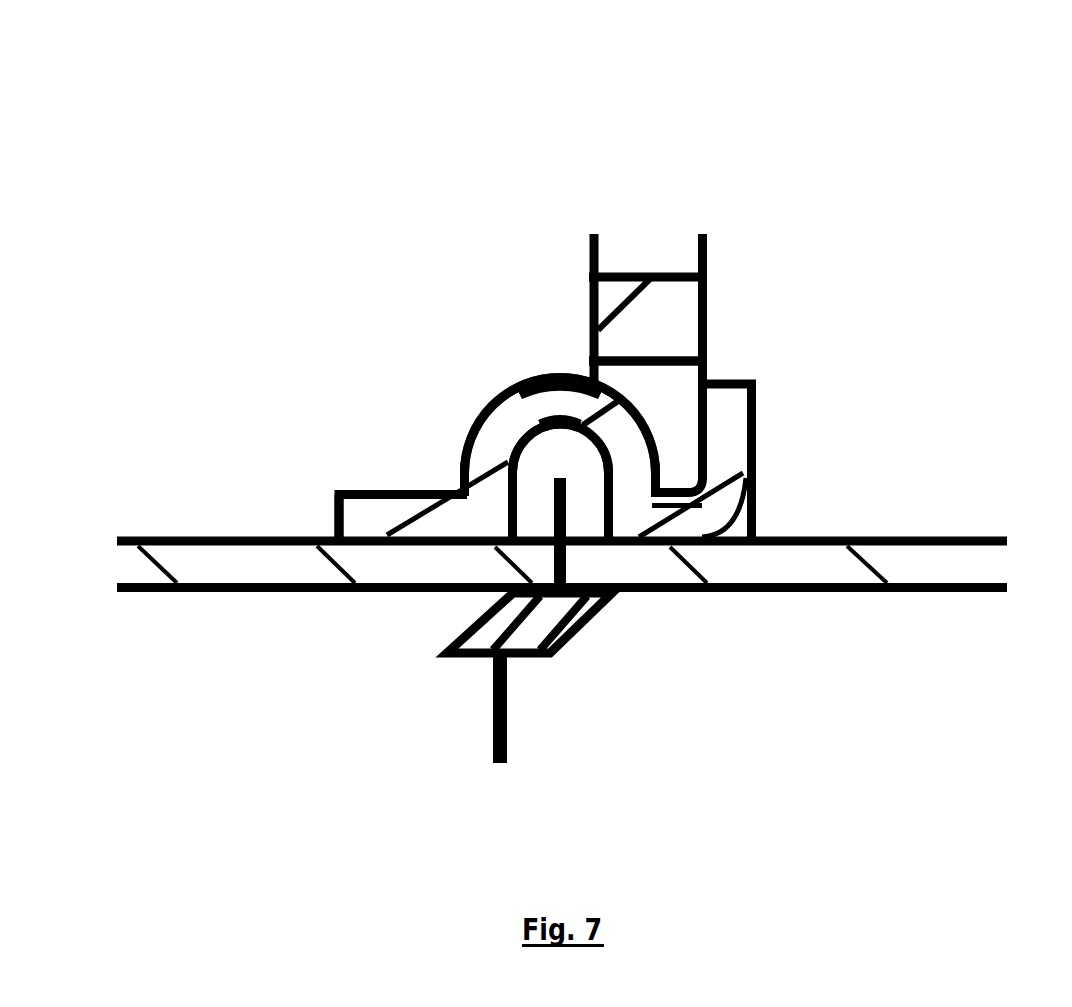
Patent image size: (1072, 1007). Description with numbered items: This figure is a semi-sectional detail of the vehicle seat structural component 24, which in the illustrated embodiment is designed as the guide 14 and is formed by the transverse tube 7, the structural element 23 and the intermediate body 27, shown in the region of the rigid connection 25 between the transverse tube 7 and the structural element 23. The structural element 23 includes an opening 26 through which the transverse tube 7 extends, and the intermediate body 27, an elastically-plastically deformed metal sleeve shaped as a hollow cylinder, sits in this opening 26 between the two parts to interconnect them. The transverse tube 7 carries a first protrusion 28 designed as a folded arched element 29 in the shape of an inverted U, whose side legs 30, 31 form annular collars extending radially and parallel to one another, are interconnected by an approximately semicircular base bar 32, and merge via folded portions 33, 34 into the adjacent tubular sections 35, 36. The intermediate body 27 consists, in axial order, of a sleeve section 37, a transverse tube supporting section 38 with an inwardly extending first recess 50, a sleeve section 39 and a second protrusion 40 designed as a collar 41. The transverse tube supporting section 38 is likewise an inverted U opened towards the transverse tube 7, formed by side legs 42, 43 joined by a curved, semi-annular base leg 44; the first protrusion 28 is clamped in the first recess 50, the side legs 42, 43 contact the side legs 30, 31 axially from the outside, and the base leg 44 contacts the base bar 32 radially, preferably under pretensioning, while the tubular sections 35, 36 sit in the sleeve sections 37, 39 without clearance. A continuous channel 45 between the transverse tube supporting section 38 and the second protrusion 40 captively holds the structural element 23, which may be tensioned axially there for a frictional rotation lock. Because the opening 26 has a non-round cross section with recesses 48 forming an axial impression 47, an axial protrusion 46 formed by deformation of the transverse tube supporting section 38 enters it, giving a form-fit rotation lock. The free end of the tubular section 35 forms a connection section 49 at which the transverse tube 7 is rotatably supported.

The transverse tube 7 is at (978, 560).
The guide 14 is at (648, 271).
The structural element 23 is at (610, 300).
The vehicle seat structural component 24 is at (583, 128).
The rigid connection 25 is at (708, 383).
The opening 26 is at (741, 313).
The intermediate body 27 is at (388, 504).
The first protrusion 28 is at (525, 364).
The folded arched element 29 is at (527, 445).
The side leg 30 is at (507, 472).
The side leg 31 is at (584, 505).
The base bar 32 is at (556, 425).
The folded portion 33 is at (535, 562).
The folded portion 34 is at (583, 563).
The tubular section 35 is at (282, 565).
The tubular section 36 is at (940, 570).
The sleeve section 37 is at (360, 522).
The transverse tube supporting section 38 is at (452, 388).
The sleeve section 39 is at (680, 518).
The second protrusion 40 is at (782, 462).
The collar 41 is at (727, 443).
The side leg 42 is at (492, 453).
The side leg 43 is at (632, 458).
The base leg 44 is at (565, 390).
The channel 45 is at (673, 408).
The axial protrusion 46 is at (616, 428).
The axial impression 47 is at (667, 269).
The recess 48 is at (658, 377).
The connection section 49 is at (143, 537).
The first recess 50 is at (552, 448).